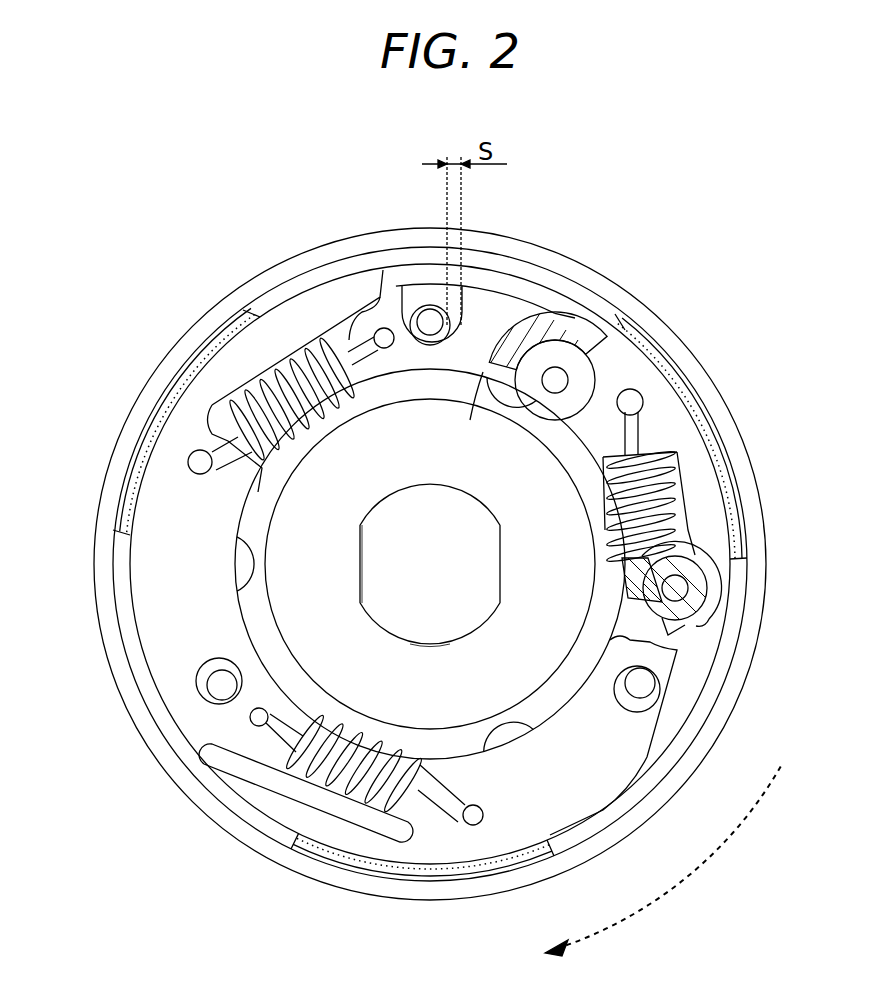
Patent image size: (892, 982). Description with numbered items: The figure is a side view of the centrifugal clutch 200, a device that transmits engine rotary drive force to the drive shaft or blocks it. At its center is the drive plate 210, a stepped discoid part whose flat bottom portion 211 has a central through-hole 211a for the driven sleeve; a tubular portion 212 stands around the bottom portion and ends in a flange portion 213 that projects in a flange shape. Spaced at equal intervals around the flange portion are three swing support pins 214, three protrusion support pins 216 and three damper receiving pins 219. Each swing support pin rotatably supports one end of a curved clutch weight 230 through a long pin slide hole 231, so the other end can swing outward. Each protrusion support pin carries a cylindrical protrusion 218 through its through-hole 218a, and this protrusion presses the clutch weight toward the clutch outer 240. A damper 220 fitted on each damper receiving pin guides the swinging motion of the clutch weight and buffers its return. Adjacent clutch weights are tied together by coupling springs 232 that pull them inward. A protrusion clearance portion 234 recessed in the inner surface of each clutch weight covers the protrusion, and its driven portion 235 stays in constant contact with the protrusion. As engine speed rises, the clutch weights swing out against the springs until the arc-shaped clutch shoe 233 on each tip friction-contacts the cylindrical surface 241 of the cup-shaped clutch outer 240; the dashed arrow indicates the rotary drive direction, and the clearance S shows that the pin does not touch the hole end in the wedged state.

The centrifugal clutch 200 is at (451, 564).
The drive plate 210 is at (365, 538).
The bottom portion 211 is at (499, 571).
The through-hole 211a is at (429, 643).
The tubular portion 212 is at (314, 682).
The flange portion 213 is at (695, 680).
The swing support pin 214 is at (402, 312).
The protrusion support pin 216 is at (575, 345).
The protrusion 218 is at (513, 392).
The through-hole 218a is at (567, 372).
The damper receiving pin 219 is at (708, 610).
The damper 220 is at (694, 638).
The clutch weight 230 is at (165, 676).
The pin slide hole 231 is at (205, 690).
The coupling spring 232 is at (680, 452).
The clutch shoe 233 is at (115, 540).
The protrusion clearance portion 234 is at (560, 368).
The driven portion 235 is at (566, 455).
The clutch outer 240 is at (432, 901).
The cylindrical surface 241 is at (747, 549).